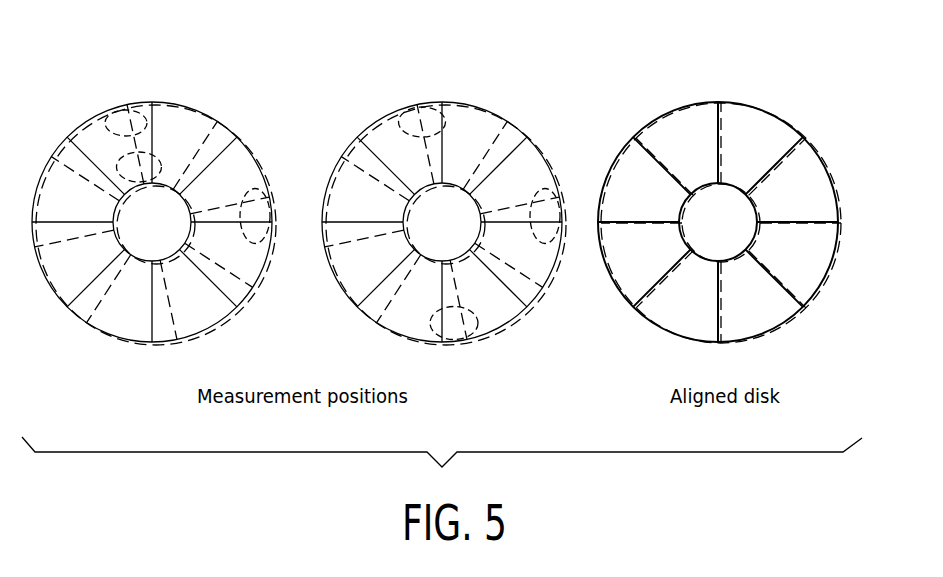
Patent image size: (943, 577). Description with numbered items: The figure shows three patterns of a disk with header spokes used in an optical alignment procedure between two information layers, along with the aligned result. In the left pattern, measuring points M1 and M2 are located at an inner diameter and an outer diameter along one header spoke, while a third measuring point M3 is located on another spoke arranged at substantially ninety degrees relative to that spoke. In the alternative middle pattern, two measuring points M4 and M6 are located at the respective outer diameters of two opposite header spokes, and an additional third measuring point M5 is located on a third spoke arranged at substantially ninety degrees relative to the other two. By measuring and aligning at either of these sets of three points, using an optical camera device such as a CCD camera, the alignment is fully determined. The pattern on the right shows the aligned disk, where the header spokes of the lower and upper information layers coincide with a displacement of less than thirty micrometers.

The measuring point M1 is at (161, 107).
The measuring point M2 is at (165, 157).
The measuring point M3 is at (270, 186).
The measuring point M4 is at (453, 109).
The measuring point M5 is at (560, 186).
The measuring point M6 is at (479, 338).